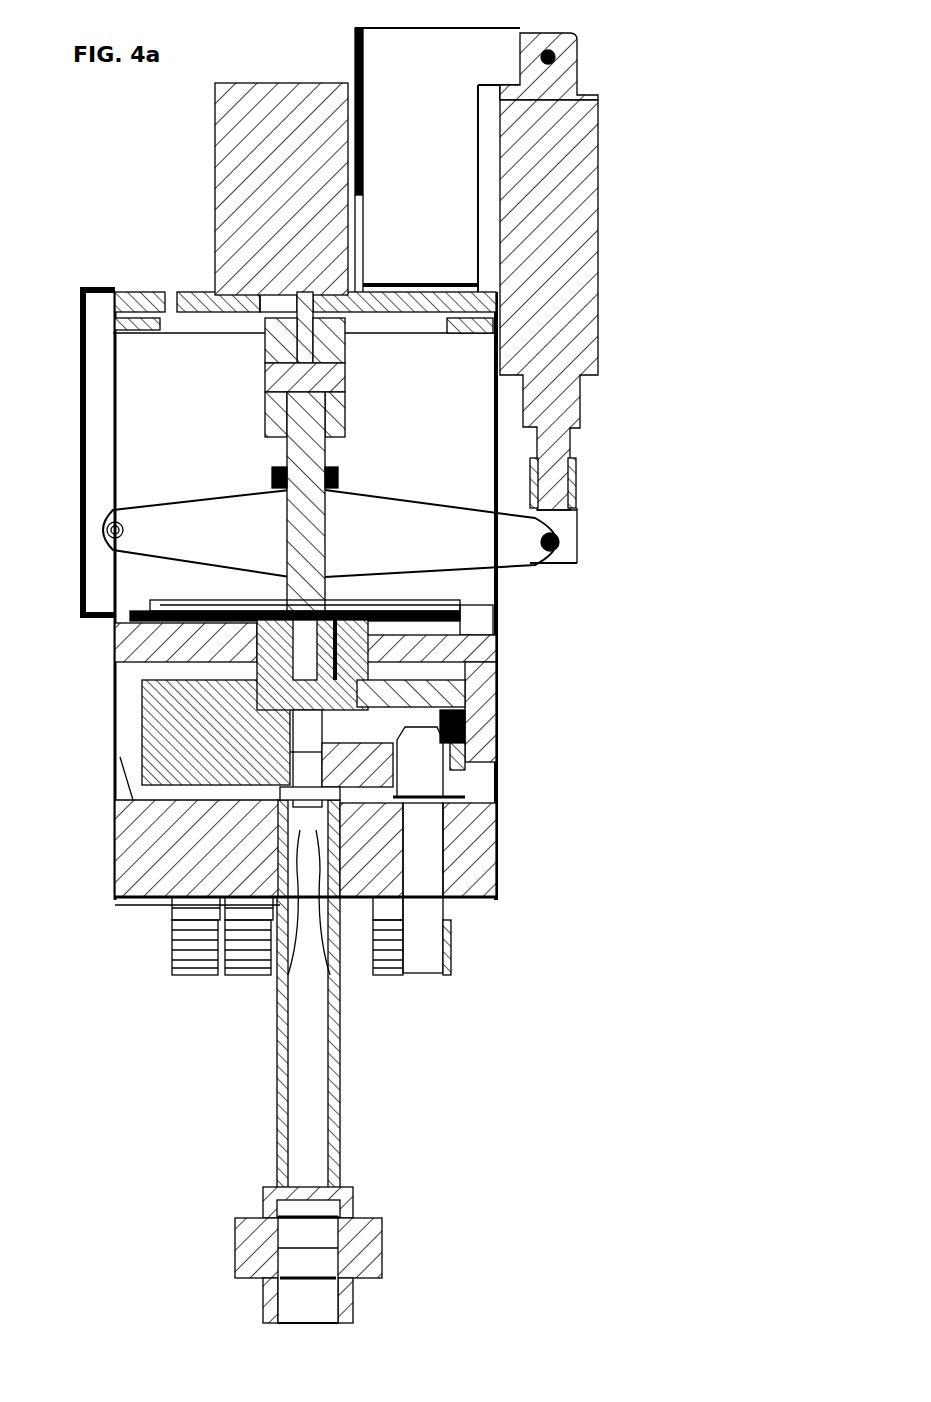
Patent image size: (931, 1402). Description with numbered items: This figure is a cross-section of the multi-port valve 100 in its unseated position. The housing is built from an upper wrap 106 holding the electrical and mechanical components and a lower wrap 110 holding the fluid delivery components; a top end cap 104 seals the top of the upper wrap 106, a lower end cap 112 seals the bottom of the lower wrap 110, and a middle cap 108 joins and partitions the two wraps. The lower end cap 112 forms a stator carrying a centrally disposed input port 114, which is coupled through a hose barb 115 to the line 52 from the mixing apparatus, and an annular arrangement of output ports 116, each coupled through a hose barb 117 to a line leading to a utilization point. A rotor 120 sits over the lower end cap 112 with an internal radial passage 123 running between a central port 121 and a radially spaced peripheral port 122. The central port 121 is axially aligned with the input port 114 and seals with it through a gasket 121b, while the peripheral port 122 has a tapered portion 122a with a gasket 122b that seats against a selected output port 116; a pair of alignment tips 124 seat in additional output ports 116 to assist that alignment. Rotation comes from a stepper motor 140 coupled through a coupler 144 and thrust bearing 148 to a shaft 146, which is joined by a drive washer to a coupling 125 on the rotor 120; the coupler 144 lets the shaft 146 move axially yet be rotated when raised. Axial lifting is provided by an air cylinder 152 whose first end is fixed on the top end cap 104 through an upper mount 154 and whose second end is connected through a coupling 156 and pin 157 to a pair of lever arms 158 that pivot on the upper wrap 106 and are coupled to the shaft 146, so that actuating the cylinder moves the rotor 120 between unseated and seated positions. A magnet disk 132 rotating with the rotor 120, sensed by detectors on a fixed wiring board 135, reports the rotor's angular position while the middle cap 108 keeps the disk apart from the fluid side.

The multi-port valve 100 is at (84, 195).
The top end cap 104 is at (143, 290).
The upper wrap 106 is at (82, 490).
The middle cap 108 is at (118, 640).
The lower wrap 110 is at (125, 790).
The lower end cap 112 is at (487, 878).
The input port 114 is at (338, 978).
The hose barb 115 is at (278, 975).
The output ports 116 is at (428, 845).
The hose barb 117 is at (195, 975).
The rotor 120 is at (160, 722).
The central port 121 is at (290, 815).
The gasket 121b is at (293, 752).
The peripheral port 122 is at (427, 782).
The tapered portion 122a is at (453, 793).
The gasket 122b is at (463, 703).
The internal radial passage 123 is at (383, 725).
The alignment tips 124 is at (235, 800).
The coupling 125 is at (452, 623).
The magnet disk 132 is at (165, 616).
The wiring board 135 is at (210, 610).
The motor 140 is at (286, 105).
The coupler 144 is at (350, 412).
The shaft 146 is at (335, 470).
The thrust bearing 148 is at (342, 480).
The air cylinder 152 is at (572, 330).
The upper mount 154 is at (455, 52).
The coupling 156 is at (577, 497).
The pin 157 is at (577, 563).
The lever arms 158 is at (185, 520).
The line 52 is at (313, 1162).